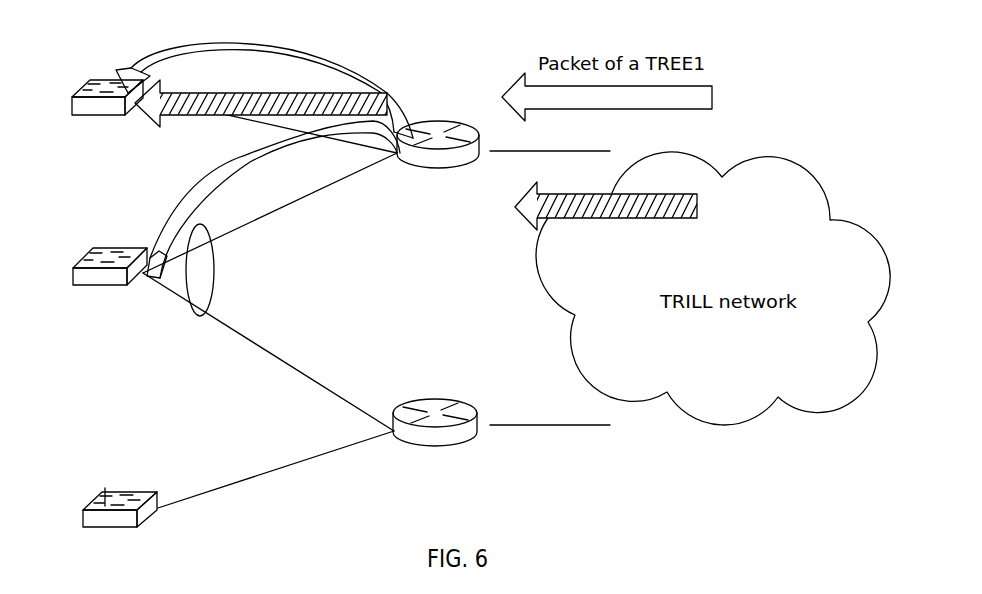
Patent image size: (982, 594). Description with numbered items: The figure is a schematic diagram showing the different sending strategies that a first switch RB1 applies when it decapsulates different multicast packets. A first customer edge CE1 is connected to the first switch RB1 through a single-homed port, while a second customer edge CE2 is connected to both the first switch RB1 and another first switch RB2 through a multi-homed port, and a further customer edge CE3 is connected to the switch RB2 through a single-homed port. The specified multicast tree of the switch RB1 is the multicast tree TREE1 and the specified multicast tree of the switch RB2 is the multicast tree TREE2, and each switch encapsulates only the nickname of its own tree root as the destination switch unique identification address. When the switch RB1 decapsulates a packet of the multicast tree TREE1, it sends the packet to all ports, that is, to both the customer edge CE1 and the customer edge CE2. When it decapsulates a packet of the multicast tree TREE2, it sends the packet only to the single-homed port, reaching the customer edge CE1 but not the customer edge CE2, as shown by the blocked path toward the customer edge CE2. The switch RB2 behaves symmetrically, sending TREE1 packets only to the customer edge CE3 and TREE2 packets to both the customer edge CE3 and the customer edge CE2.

The first customer edge CE1 is at (90, 81).
The second customer edge CE2 is at (92, 261).
The first customer edge CE3 is at (97, 507).
The first switch RB1 is at (438, 125).
The another first switch RB2 is at (435, 406).
The multicast tree TREE1 is at (295, 126).
The multicast tree TREE2 is at (435, 310).